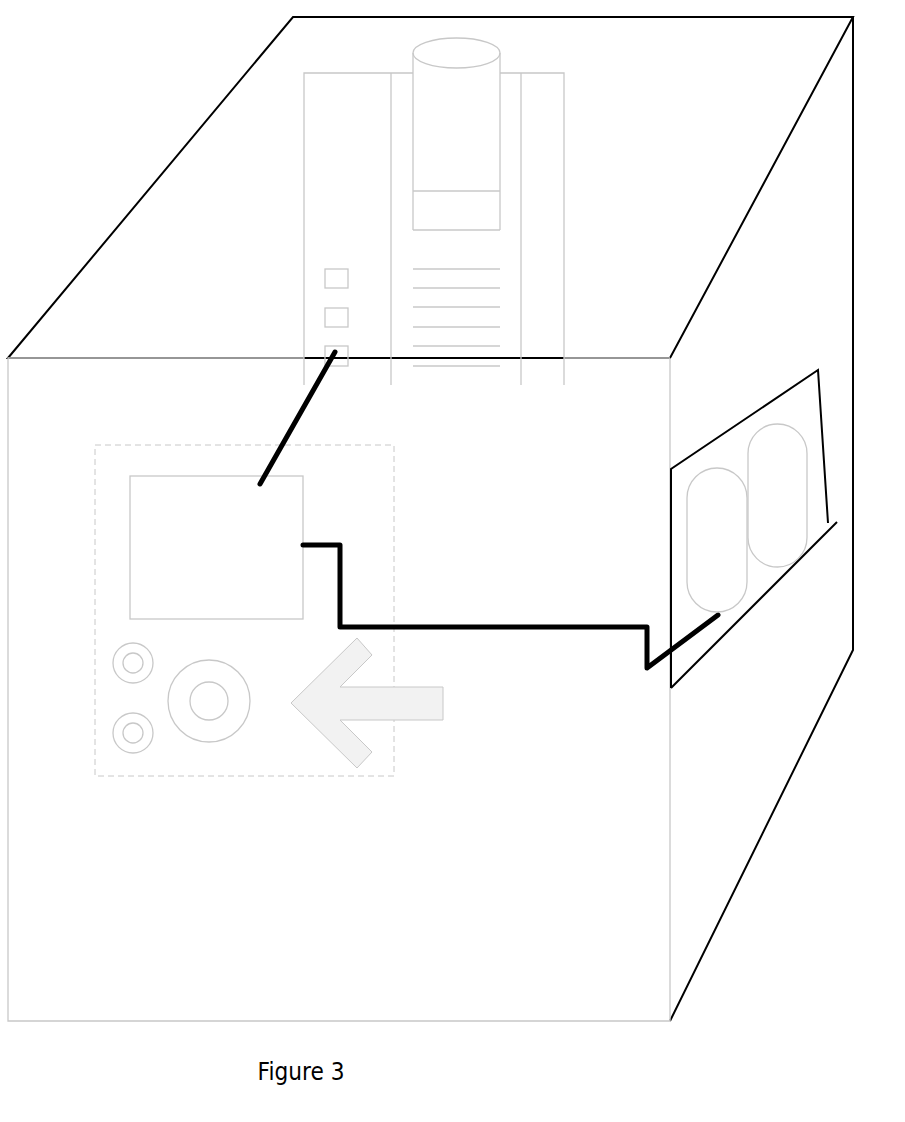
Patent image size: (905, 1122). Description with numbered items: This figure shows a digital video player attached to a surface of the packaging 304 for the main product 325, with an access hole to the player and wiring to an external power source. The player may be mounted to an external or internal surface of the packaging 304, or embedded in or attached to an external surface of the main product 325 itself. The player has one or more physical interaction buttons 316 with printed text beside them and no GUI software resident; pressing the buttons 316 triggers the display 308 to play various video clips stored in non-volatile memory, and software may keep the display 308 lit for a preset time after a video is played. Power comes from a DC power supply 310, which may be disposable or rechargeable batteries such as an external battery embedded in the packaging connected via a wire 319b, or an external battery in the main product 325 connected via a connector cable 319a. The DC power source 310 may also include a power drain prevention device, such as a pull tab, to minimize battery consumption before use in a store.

The packaging 304 is at (324, 211).
The display 308 is at (237, 588).
The DC power supply 310 is at (754, 529).
The physical interaction buttons 316 is at (335, 639).
The connector cable 319a is at (265, 418).
The wire 319b is at (510, 606).
The main product 325 is at (695, 148).